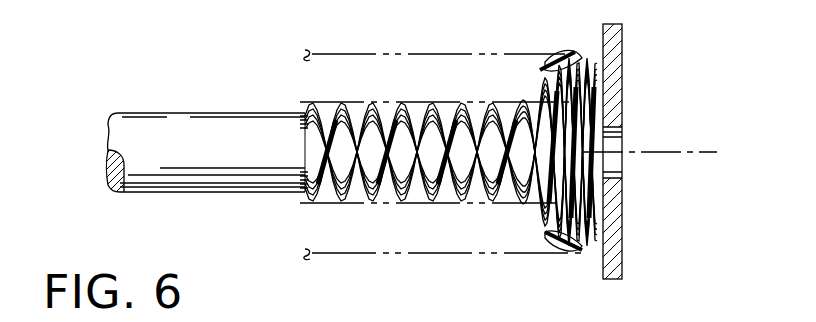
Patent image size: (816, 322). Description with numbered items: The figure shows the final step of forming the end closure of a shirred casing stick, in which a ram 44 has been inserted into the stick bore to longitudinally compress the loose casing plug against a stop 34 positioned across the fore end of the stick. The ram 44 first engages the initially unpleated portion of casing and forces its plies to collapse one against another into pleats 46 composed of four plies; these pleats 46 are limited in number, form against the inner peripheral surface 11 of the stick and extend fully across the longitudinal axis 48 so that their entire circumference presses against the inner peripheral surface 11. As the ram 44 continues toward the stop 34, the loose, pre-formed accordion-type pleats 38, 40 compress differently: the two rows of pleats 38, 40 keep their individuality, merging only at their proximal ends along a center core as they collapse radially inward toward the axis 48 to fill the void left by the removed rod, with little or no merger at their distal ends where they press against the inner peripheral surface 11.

The inner peripheral surface 11 is at (392, 106).
The stop 34 is at (623, 58).
The pleats 38 is at (462, 103).
The pleats 40 is at (523, 196).
The ram 44 is at (160, 112).
The pleats 46 is at (327, 205).
The longitudinal axis 48 is at (688, 152).